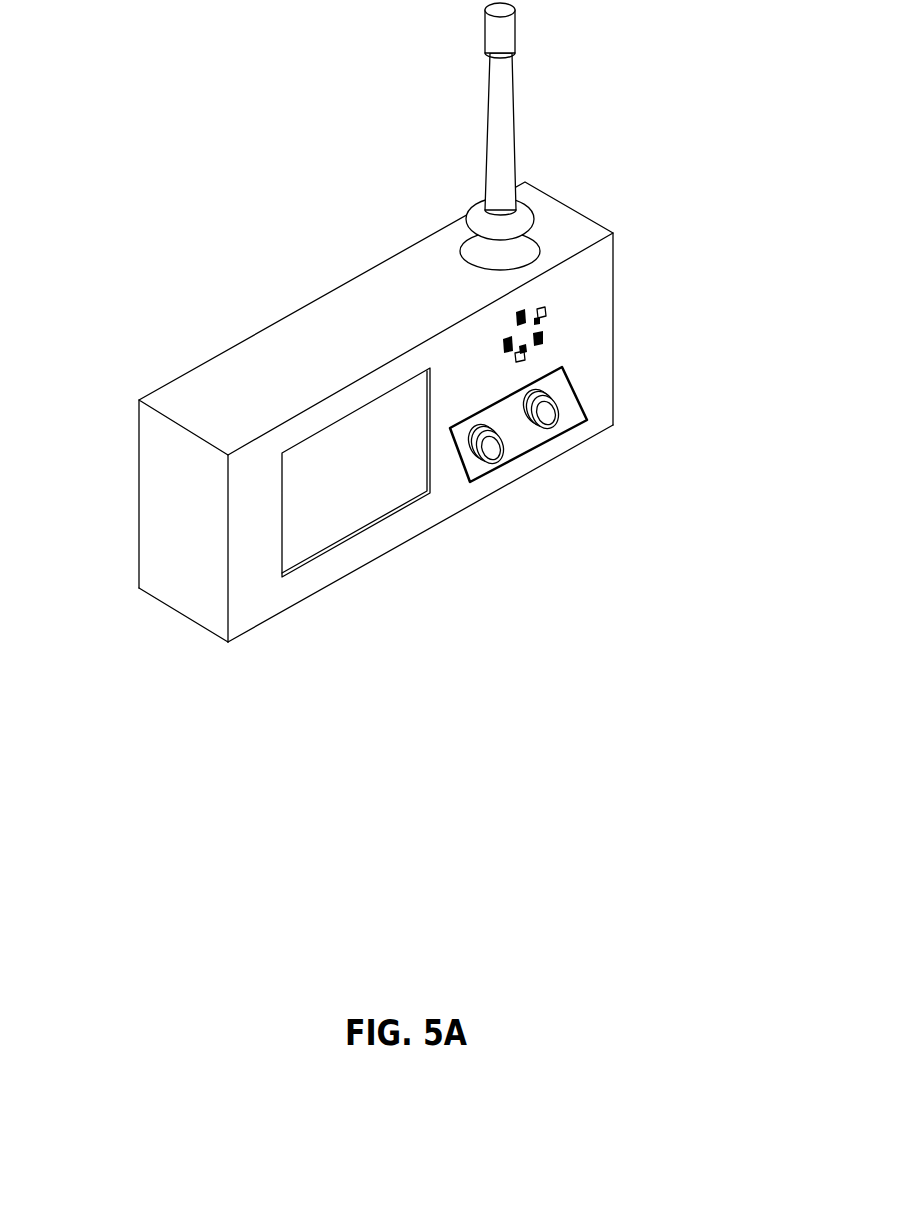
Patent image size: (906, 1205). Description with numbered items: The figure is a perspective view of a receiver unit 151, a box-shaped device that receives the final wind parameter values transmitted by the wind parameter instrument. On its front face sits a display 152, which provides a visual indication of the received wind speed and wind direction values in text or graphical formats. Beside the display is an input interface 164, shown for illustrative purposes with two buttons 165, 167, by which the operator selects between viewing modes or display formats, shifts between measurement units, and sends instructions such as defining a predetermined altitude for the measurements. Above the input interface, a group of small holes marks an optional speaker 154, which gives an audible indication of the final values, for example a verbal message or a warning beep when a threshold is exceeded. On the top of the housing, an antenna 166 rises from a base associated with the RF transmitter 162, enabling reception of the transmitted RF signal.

The receiver unit 151 is at (183, 138).
The display 152 is at (332, 518).
The speaker 154 is at (617, 297).
The RF transmitter 162 is at (593, 167).
The input interface 164 is at (478, 478).
The button 165 is at (586, 510).
The antenna 166 is at (489, 94).
The button 167 is at (627, 449).